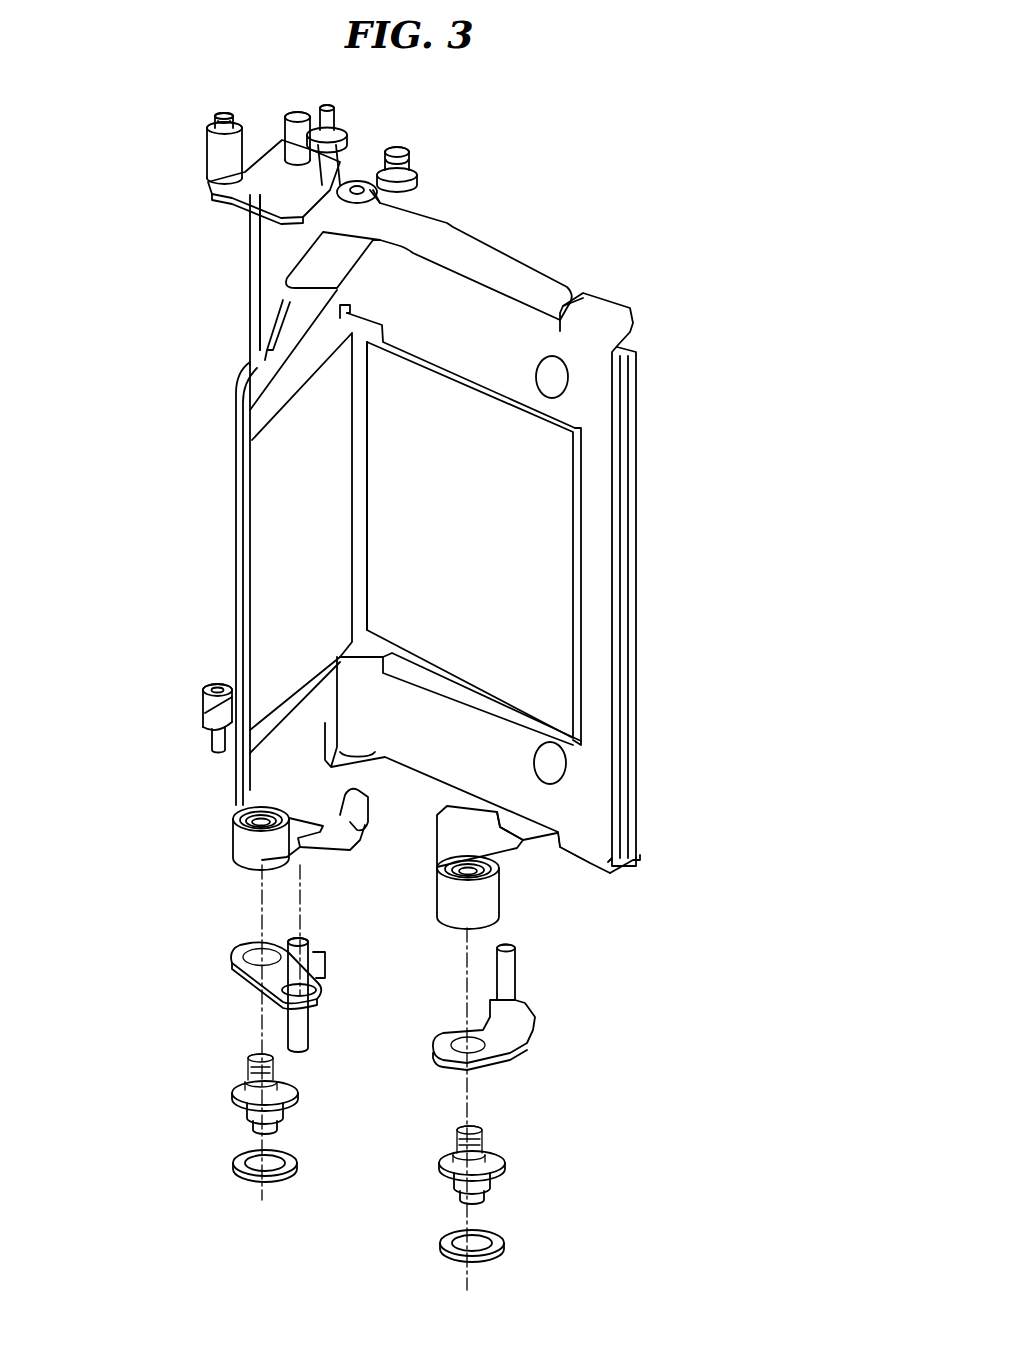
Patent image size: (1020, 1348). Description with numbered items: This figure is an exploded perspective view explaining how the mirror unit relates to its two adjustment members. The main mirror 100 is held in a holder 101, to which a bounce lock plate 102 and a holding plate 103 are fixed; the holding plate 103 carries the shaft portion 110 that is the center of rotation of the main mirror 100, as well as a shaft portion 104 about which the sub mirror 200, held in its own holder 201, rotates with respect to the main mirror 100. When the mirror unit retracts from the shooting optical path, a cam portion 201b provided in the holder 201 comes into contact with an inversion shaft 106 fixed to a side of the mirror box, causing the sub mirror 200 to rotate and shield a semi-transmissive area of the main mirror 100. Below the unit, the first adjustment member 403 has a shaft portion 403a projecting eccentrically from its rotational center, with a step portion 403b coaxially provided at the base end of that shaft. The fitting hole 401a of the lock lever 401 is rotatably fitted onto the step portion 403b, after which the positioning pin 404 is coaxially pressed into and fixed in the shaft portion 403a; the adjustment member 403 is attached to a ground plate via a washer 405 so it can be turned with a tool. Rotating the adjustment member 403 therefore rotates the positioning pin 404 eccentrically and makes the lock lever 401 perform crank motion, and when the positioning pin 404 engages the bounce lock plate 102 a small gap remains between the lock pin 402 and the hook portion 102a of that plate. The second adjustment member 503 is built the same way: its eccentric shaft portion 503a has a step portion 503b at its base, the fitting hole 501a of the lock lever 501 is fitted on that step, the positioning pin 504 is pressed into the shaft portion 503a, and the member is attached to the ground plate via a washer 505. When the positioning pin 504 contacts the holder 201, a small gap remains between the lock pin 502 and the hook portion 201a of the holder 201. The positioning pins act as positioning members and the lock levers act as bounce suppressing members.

The main mirror 100 is at (543, 620).
The holder 101 is at (595, 826).
The bounce lock plate 102 is at (447, 843).
The hook portion 102a is at (567, 843).
The holding plate 103 is at (253, 152).
The shaft portion 104 is at (420, 193).
The inversion shaft 106 is at (330, 155).
The shaft portion 110 is at (217, 155).
The sub mirror 200 is at (268, 526).
The holder 201 is at (370, 813).
The hook portion 201a is at (300, 853).
The cam portion 201b is at (330, 212).
The lock lever 401 is at (520, 1045).
The fitting hole 401a is at (445, 1052).
The lock pin 402 is at (515, 980).
The adjustment member 403 is at (500, 1170).
The shaft portion 403a is at (483, 1142).
The step portion 403b is at (492, 1165).
The positioning pin 404 is at (500, 905).
The washer 405 is at (500, 1250).
The lock lever 501 is at (240, 968).
The fitting hole 501a is at (243, 955).
The lock pin 502 is at (308, 1025).
The adjustment member 503 is at (232, 1088).
The shaft portion 503a is at (275, 1070).
The step portion 503b is at (285, 1088).
The positioning pin 504 is at (228, 846).
The washer 505 is at (235, 1158).